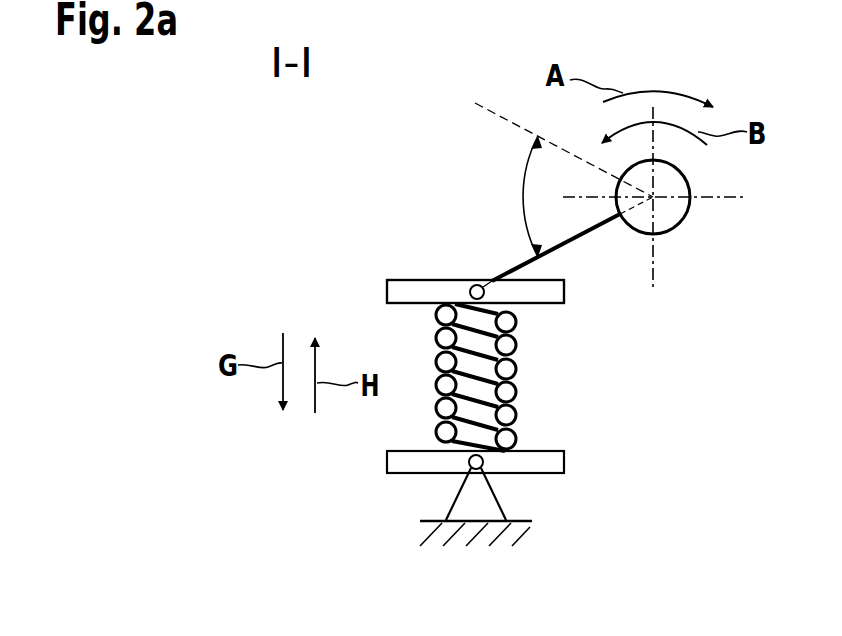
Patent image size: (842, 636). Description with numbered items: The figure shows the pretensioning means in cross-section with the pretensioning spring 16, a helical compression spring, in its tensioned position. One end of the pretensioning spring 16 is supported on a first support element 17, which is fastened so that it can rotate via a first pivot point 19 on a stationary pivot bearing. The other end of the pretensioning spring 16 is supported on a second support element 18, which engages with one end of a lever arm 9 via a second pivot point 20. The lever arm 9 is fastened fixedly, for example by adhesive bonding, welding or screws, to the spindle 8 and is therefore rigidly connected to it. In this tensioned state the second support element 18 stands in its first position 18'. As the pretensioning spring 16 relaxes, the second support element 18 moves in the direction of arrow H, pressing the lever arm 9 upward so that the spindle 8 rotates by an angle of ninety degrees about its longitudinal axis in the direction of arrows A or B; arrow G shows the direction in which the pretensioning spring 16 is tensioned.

The spindle 8 is at (677, 213).
The lever arm 9 is at (573, 242).
The pretensioning spring 16 is at (507, 370).
The first support element 17 is at (553, 460).
The second support element 18 is at (442, 292).
The first position 18' is at (436, 246).
The first pivot point 19 is at (472, 470).
The second pivot point 20 is at (473, 286).